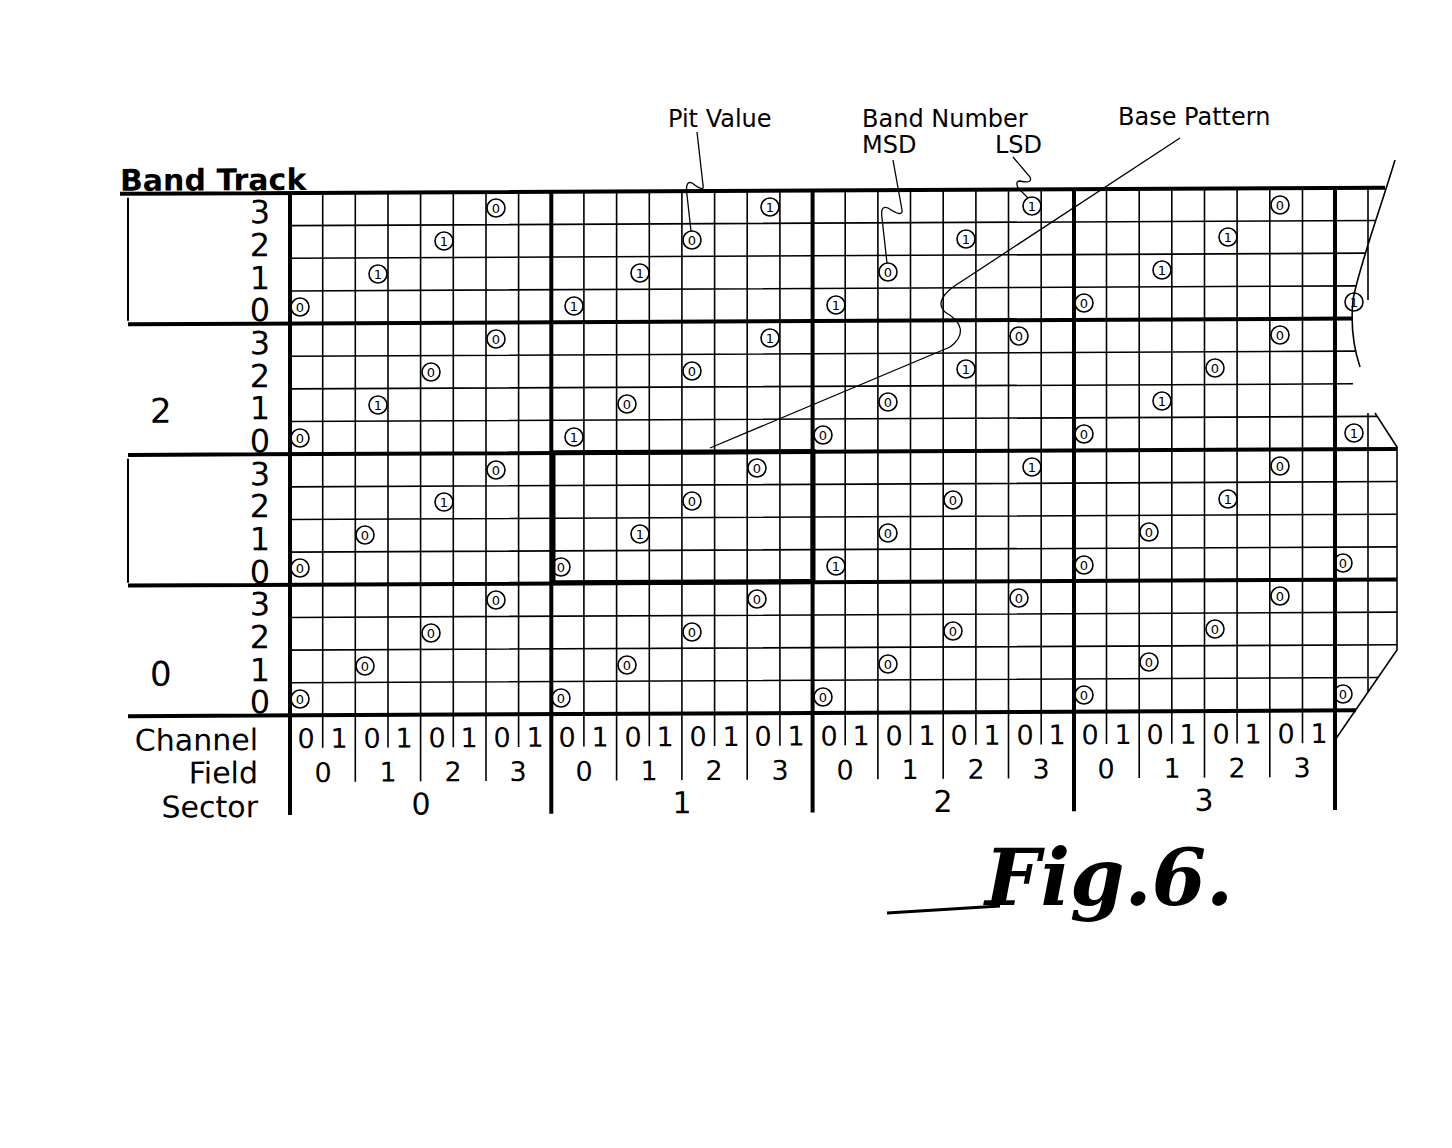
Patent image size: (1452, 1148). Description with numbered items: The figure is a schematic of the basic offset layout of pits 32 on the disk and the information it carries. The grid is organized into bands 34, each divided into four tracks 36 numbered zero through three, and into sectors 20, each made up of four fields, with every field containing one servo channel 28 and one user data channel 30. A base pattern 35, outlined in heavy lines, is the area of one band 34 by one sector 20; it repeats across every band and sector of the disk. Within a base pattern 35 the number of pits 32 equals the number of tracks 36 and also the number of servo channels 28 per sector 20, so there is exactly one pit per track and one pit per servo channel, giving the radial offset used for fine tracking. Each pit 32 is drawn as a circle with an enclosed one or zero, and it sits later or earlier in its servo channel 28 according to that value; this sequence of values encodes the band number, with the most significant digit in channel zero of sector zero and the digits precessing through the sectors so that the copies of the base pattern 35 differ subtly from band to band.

The sector 20 is at (555, 810).
The servo channel 28 is at (427, 750).
The user data channel 30 is at (480, 750).
The pit 32 is at (574, 297).
The band 34 is at (128, 514).
The base pattern 35 is at (555, 498).
The track 36 is at (128, 253).